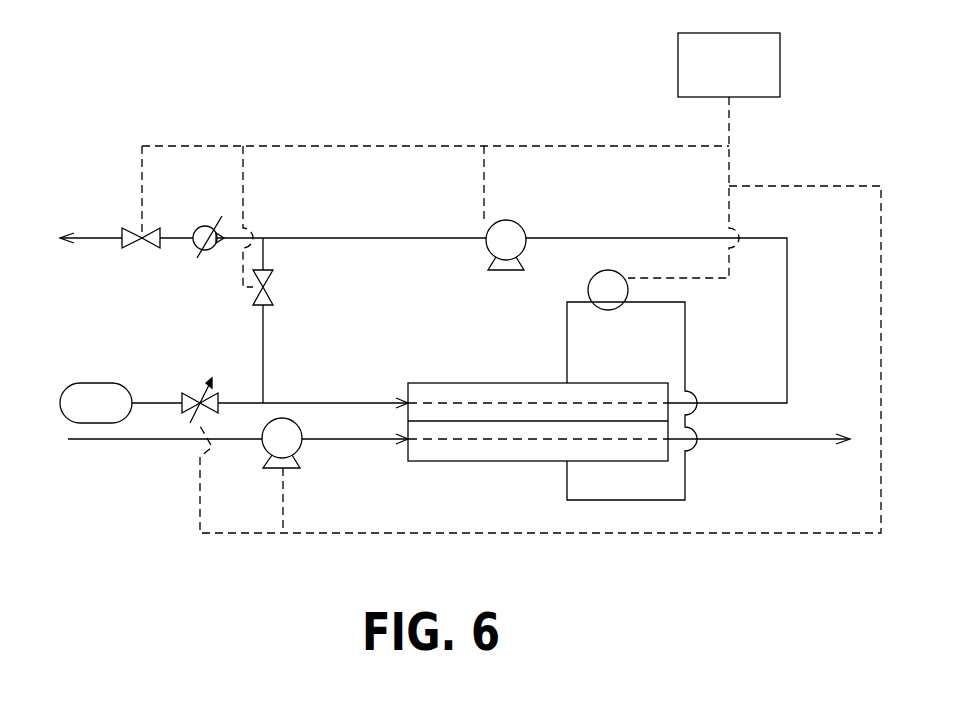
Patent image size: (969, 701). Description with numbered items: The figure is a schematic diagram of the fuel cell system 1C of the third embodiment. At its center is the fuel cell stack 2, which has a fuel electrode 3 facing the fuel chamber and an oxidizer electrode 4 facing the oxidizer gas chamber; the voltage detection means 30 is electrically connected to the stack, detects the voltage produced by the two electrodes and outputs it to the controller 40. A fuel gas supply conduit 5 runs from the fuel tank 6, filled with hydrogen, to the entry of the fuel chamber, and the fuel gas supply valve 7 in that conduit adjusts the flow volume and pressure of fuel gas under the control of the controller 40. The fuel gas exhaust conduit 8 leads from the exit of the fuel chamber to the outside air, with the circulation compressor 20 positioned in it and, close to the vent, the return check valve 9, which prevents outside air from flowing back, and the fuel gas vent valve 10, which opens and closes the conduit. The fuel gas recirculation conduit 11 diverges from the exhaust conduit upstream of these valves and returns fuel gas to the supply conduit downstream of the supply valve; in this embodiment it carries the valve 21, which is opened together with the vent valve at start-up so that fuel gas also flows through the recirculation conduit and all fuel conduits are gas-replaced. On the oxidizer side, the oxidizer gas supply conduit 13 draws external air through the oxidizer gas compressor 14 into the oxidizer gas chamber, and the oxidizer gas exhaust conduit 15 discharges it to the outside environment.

The fuel cell system 1C is at (458, 142).
The fuel cell stack 2 is at (537, 383).
The fuel electrode 3 is at (462, 383).
The oxidizer electrode 4 is at (457, 461).
The fuel gas supply conduit 5 is at (362, 401).
The fuel tank 6 is at (98, 383).
The fuel gas supply valve 7 is at (198, 392).
The fuel gas exhaust conduit 8 is at (727, 400).
The return check valve 9 is at (207, 226).
The fuel gas vent valve 10 is at (130, 232).
The fuel gas recirculation conduit 11 is at (264, 368).
The oxidizer gas supply conduit 13 is at (343, 443).
The oxidizer gas compressor 14 is at (263, 447).
The oxidizer gas exhaust conduit 15 is at (722, 442).
The circulation compressor 20 is at (503, 221).
The valve for the fuel gas recirculation conduit 21 is at (271, 290).
The voltage detection means 30 is at (590, 283).
The controller 40 is at (678, 68).